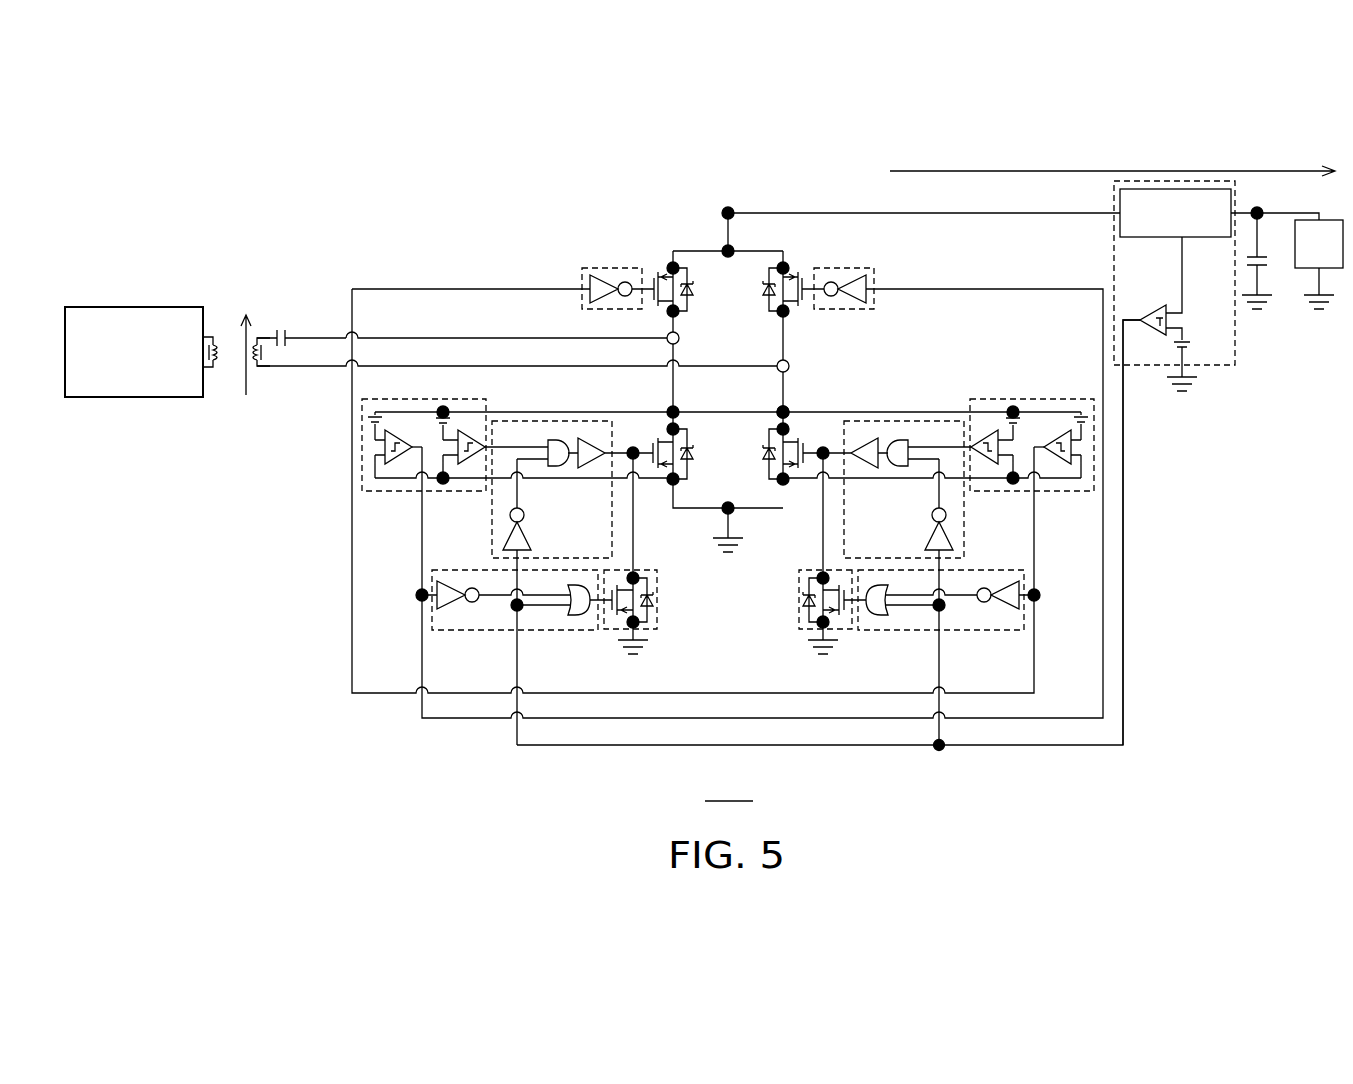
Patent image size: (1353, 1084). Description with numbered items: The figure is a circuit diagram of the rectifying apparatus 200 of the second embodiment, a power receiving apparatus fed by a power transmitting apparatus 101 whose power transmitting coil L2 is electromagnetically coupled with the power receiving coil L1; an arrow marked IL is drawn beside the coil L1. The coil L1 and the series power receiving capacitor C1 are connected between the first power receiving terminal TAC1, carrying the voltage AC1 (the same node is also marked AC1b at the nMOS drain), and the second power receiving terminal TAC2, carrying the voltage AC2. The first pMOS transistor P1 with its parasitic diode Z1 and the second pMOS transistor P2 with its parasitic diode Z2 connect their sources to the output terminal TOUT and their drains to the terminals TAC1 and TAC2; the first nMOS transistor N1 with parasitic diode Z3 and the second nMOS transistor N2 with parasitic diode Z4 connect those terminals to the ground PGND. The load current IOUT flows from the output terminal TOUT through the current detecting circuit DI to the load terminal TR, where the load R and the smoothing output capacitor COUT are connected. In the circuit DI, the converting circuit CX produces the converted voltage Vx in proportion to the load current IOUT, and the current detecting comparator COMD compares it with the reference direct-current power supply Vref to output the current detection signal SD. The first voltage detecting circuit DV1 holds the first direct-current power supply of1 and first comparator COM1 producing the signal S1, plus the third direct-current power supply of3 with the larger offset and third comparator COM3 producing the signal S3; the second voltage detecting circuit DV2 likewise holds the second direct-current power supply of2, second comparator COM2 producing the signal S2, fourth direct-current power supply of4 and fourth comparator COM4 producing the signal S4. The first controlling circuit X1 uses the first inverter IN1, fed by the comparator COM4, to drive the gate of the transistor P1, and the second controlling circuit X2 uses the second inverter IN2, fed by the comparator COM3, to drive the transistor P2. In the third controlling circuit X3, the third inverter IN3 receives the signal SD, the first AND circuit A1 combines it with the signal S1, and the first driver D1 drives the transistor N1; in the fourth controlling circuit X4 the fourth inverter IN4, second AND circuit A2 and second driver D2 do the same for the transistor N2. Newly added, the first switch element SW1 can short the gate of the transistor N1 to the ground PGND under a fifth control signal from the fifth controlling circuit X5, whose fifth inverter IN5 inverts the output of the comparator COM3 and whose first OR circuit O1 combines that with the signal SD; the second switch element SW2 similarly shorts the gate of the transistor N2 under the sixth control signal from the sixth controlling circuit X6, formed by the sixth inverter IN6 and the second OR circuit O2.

The power transmitting apparatus 101 is at (133, 307).
The power transmitting coil L2 is at (214, 342).
The load current direction IL is at (245, 341).
The power receiving coil L1 is at (255, 368).
The power receiving capacitor C1 is at (301, 327).
The voltage AC1 is at (482, 330).
The voltage AC2 is at (517, 357).
The output terminal TOUT is at (727, 212).
The first controlling circuit X1 is at (629, 266).
The first inverter IN1 is at (605, 276).
The first pMOS transistor P1 is at (672, 266).
The parasitic diode Z1 is at (695, 292).
The first power receiving terminal TAC1 is at (667, 336).
The second controlling circuit X2 is at (878, 274).
The second inverter IN2 is at (841, 276).
The second pMOS transistor P2 is at (786, 266).
The parasitic diode Z2 is at (763, 292).
The second power receiving terminal TAC2 is at (786, 364).
The load current IOUT is at (1112, 160).
The converting circuit CX is at (1118, 207).
The current detecting circuit DI is at (1236, 350).
The load terminal TR is at (1257, 212).
The load R is at (1328, 220).
The output capacitor COUT is at (1259, 268).
The converted voltage Vx is at (1167, 275).
The current detection signal SD is at (1141, 315).
The reference direct-current power supply Vref is at (1204, 353).
The current detecting comparator COMD is at (1128, 331).
The first voltage detecting circuit DV1 is at (362, 470).
The third direct-current power supply of3 is at (375, 413).
The third comparator COM3 is at (398, 465).
The signal S3 is at (418, 433).
The first direct-current power supply of1 is at (452, 415).
The first comparator COM1 is at (469, 465).
The signal S1 is at (516, 437).
The third controlling circuit X3 is at (492, 540).
The first AND circuit A1 is at (555, 440).
The first driver D1 is at (590, 438).
The third inverter IN3 is at (526, 536).
The first nMOS transistor N1 is at (665, 467).
The parasitic diode Z3 is at (694, 452).
The ground PGND is at (734, 537).
The second nMOS transistor N2 is at (795, 467).
The parasitic diode Z4 is at (763, 452).
The first AC node AC1b is at (805, 404).
The fourth controlling circuit X4 is at (964, 540).
The second driver D2 is at (861, 438).
The second AND circuit A2 is at (902, 440).
The fourth inverter IN4 is at (932, 536).
The signal S2 is at (939, 437).
The second voltage detecting circuit DV2 is at (1028, 398).
The second direct-current power supply of2 is at (1011, 414).
The second comparator COM2 is at (988, 465).
The fourth direct-current power supply of4 is at (1080, 413).
The fourth comparator COM4 is at (1059, 465).
The signal S4 is at (1042, 433).
The fifth controlling circuit X5 is at (485, 630).
The fifth inverter IN5 is at (451, 607).
The first OR circuit O1 is at (583, 615).
The first switch element SW1 is at (660, 590).
The sixth controlling circuit X6 is at (921, 630).
The sixth inverter IN6 is at (1005, 607).
The second OR circuit O2 is at (871, 615).
The second switch element SW2 is at (795, 615).
The rectifying apparatus 200 is at (746, 545).